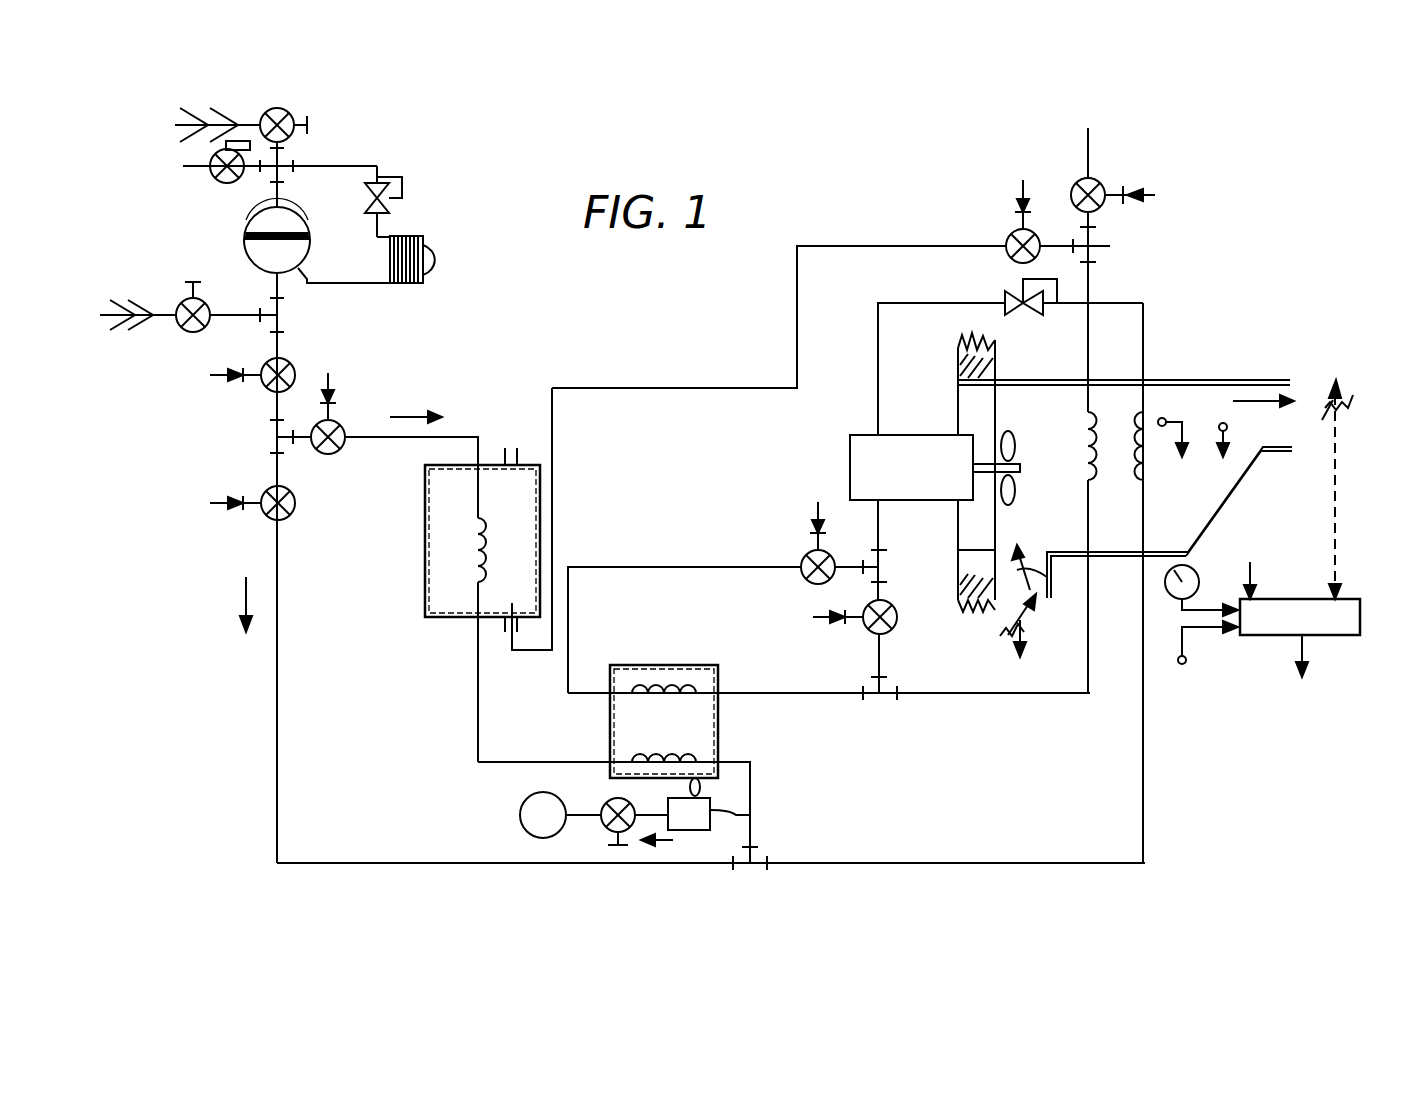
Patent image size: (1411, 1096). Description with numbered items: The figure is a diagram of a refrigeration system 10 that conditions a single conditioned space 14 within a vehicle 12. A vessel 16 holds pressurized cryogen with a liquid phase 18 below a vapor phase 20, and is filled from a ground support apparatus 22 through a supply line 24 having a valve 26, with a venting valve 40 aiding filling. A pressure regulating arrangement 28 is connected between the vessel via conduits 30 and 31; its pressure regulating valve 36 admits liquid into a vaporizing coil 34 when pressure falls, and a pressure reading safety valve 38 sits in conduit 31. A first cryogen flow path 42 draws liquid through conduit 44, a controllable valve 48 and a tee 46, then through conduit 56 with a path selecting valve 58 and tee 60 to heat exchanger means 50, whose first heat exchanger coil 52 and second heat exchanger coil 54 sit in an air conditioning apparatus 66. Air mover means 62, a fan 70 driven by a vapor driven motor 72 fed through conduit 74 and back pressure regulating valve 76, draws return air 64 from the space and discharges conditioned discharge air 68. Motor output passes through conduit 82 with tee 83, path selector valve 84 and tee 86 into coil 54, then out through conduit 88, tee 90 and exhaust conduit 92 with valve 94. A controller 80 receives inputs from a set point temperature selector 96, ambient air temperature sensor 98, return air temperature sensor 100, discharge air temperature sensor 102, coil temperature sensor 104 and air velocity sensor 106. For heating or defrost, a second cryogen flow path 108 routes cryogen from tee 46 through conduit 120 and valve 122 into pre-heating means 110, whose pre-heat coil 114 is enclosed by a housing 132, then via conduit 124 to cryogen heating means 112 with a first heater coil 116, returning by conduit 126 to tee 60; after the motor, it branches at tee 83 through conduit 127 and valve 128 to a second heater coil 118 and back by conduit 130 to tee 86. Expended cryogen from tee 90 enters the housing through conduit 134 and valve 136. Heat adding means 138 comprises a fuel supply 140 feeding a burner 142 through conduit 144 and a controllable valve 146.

The refrigeration system 10 is at (643, 326).
The vehicle 12 is at (958, 360).
The conditioned space 14 is at (1326, 462).
The vessel 16 is at (364, 254).
The liquid phase 18 is at (250, 267).
The vapor phase 20 is at (300, 213).
The ground support apparatus 22 is at (120, 330).
The supply line 24 is at (233, 318).
The valve 26 is at (177, 303).
The pressure regulating arrangement 28 is at (424, 226).
The conduit 30 is at (308, 280).
The conduit 31 is at (330, 166).
The vaporizing coil 34 is at (423, 283).
The pressure regulating valve 36 is at (365, 198).
The pressure reading safety valve 38 is at (216, 184).
The venting valve 40 is at (290, 113).
The first cryogen fluid flow path 42 is at (240, 598).
The conduit 44 is at (277, 343).
The tee 46 is at (275, 437).
The controllable valve 48 is at (268, 387).
The heat exchanger means 50 is at (1141, 482).
The first heat exchanger coil 52 is at (1146, 480).
The second heat exchanger coil 54 is at (1088, 452).
The conduit 56 is at (279, 728).
The controllable path selecting valve 58 is at (296, 503).
The tee 60 is at (750, 868).
The air mover means 62 is at (931, 539).
The return air 64 is at (1102, 575).
The air conditioning apparatus 66 is at (1243, 380).
The discharge air 68 is at (1295, 400).
The fan 70 is at (1020, 441).
The vapor driven motor 72 is at (850, 449).
The conduit 74 is at (878, 368).
The back pressure regulating valve 76 is at (1030, 315).
The controller 80 is at (1330, 636).
The conduit 82 is at (990, 699).
The tee 83 is at (885, 568).
The controllable path selector valve 84 is at (866, 630).
The tee 86 is at (880, 699).
The conduit 88 is at (1090, 330).
The tee 90 is at (1105, 246).
The exhaust conduit 92 is at (1090, 150).
The controllable path selector valve 94 is at (1075, 183).
The set point temperature selector 96 is at (1196, 574).
The ambient air temperature sensor 98 is at (1187, 661).
The return air temperature sensor 100 is at (1005, 626).
The discharge air temperature sensor 102 is at (1340, 405).
The temperature sensor 104 is at (1159, 418).
The air velocity sensor 106 is at (1227, 425).
The second cryogen flow path 108 is at (437, 399).
The cryogen pre-heating means 110 is at (432, 618).
The cryogen heating means 112 is at (720, 665).
The pre-heat coil 114 is at (485, 518).
The first heater coil 116 is at (670, 750).
The second heater coil 118 is at (682, 697).
The conduit 120 is at (373, 437).
The controllable path selecting valve 122 is at (345, 428).
The conduit 124 is at (478, 706).
The conduit 126 is at (752, 762).
The conduit 127 is at (742, 567).
The controllable path selecting valve 128 is at (806, 554).
The conduit 130 is at (800, 693).
The housing 132 is at (425, 545).
The conduit 134 is at (756, 388).
The controllable path selecting valve 136 is at (1007, 238).
The means for adding heat 138 is at (595, 856).
The fuel supply 140 is at (522, 830).
The burner 142 is at (732, 804).
The conduit 144 is at (580, 815).
The controllable valve 146 is at (606, 824).